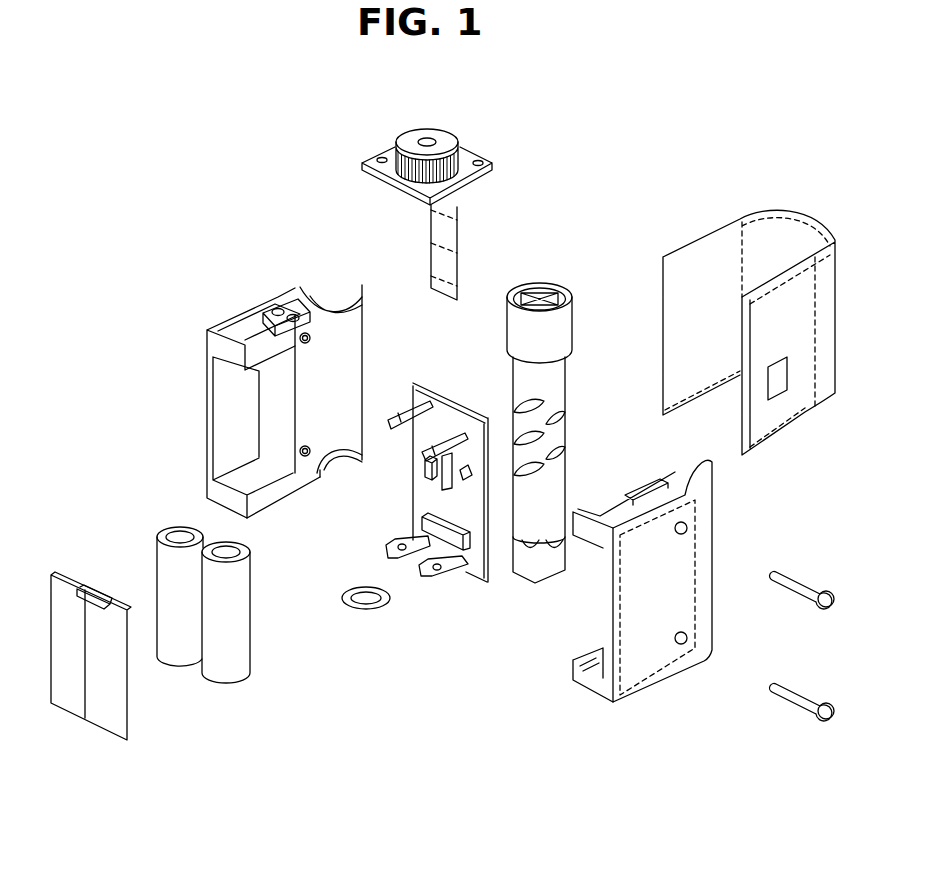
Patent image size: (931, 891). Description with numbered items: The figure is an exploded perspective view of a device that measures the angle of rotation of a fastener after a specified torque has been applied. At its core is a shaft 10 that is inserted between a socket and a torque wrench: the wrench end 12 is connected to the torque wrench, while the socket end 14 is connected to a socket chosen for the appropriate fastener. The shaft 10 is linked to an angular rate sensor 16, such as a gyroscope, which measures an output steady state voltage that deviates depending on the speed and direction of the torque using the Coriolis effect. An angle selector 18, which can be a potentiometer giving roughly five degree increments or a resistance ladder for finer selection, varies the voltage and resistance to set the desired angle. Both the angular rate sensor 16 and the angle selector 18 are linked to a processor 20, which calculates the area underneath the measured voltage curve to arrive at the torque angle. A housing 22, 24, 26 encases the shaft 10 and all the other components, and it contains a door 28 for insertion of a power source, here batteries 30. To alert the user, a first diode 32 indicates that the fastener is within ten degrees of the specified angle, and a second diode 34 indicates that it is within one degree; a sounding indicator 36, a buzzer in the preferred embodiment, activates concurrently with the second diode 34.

The shaft 10 is at (568, 398).
The wrench end 12 is at (538, 281).
The socket end 14 is at (532, 573).
The angular rate sensor 16 is at (447, 490).
The angle selector 18 is at (427, 128).
The processor 20 is at (425, 468).
The housing 22 is at (792, 212).
The housing 24 is at (713, 540).
The housing 26 is at (235, 316).
The door 28 is at (98, 677).
The batteries 30 is at (183, 628).
The first light emitting diode 32 is at (293, 304).
The second light emitting diode 34 is at (318, 320).
The sounding indicator 36 is at (464, 465).